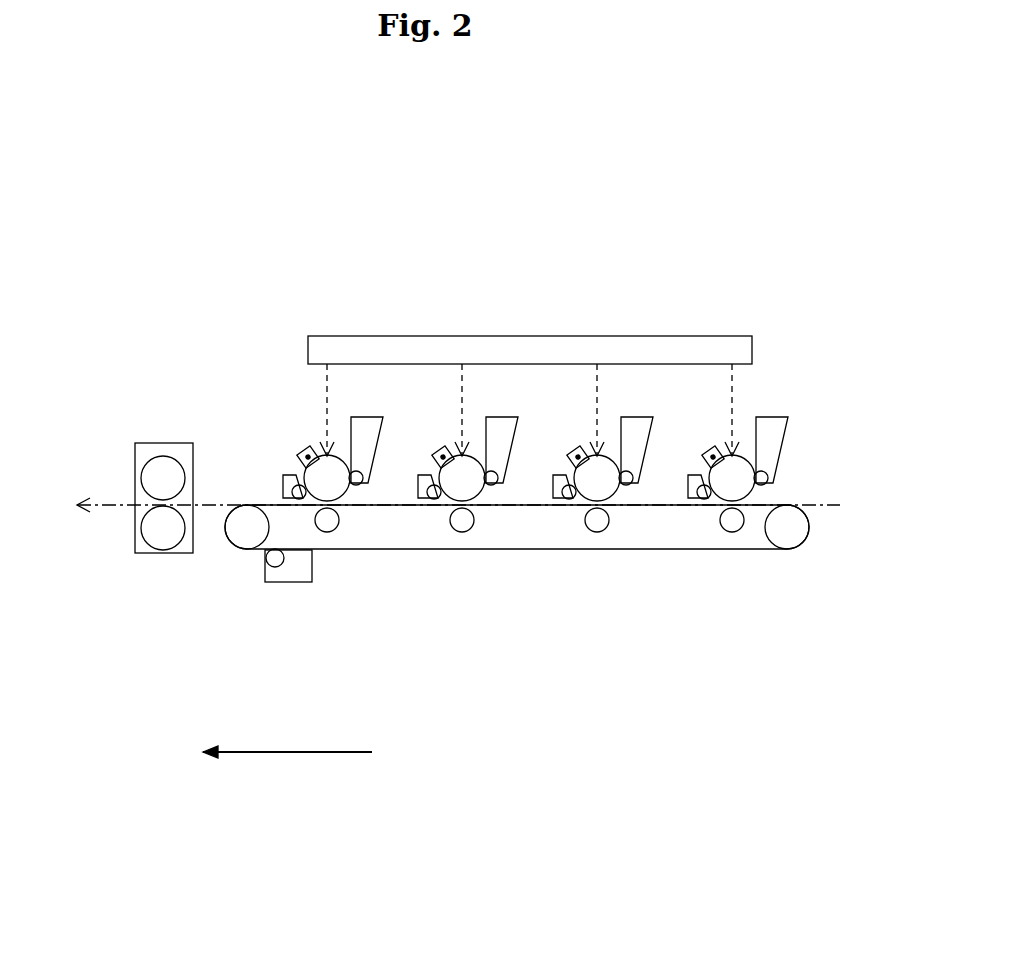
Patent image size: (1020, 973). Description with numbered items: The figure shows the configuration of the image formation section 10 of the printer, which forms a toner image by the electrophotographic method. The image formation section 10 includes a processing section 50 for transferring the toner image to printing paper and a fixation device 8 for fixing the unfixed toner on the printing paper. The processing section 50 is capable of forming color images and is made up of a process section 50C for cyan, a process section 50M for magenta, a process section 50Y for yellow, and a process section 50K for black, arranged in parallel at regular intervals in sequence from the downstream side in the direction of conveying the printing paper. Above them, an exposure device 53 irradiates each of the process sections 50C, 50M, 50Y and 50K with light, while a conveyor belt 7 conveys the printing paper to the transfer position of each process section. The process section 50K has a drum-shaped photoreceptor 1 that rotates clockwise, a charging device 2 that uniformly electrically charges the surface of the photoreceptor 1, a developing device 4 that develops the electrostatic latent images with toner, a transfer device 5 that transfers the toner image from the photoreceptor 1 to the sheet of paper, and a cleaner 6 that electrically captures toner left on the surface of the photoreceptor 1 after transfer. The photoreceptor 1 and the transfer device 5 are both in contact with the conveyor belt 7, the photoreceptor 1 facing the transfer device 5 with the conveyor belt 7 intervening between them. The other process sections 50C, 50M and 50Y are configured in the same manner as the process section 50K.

The image formation section 10 is at (302, 280).
The exposure device 53 is at (570, 336).
The fixation device 8 is at (163, 443).
The photoreceptor 1 is at (755, 490).
The charging device 2 is at (708, 446).
The developing device 4 is at (790, 430).
The transfer device 5 is at (706, 523).
The cleaner 6 is at (696, 474).
The conveyor belt 7 is at (677, 551).
The processing section 50 is at (560, 538).
The process section 50C is at (327, 555).
The process section 50M is at (462, 555).
The process section 50Y is at (597, 555).
The process section 50K is at (746, 513).